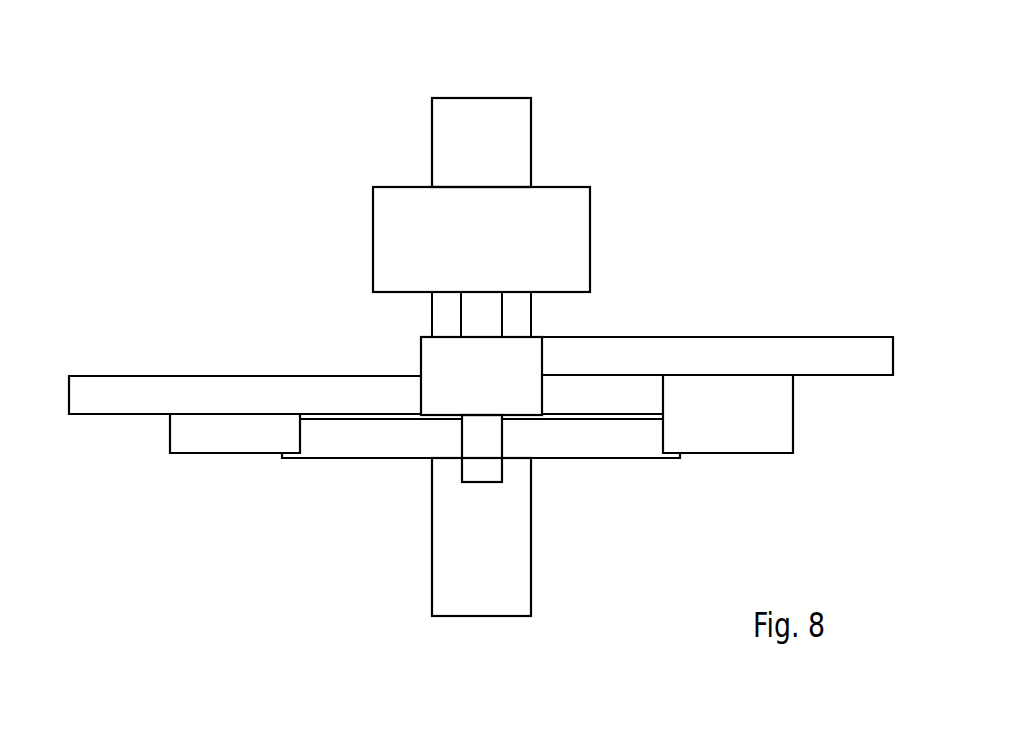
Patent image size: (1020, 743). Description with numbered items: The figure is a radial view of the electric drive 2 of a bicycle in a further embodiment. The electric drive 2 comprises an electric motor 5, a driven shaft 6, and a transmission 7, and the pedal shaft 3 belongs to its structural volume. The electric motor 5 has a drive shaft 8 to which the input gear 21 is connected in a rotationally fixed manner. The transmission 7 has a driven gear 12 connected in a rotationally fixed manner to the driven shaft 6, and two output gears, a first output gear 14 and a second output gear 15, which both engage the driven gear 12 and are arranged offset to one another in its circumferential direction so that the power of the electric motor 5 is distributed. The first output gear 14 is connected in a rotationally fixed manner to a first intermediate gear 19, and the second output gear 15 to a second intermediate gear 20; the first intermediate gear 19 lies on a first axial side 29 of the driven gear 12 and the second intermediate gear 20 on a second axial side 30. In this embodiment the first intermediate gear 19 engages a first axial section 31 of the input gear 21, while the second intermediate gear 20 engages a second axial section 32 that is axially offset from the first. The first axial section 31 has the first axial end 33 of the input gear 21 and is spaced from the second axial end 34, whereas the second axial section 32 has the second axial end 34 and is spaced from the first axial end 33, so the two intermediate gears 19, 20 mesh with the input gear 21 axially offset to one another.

The electric drive 2 is at (773, 208).
The pedal shaft 3 is at (433, 555).
The electric motor 5 is at (489, 251).
The driven shaft 6 is at (489, 551).
The transmission 7 is at (668, 216).
The drive shaft 8 is at (489, 323).
The driven gear 12 is at (569, 457).
The first output gear 14 is at (224, 440).
The second output gear 15 is at (740, 442).
The first intermediate gear 19 is at (207, 383).
The second intermediate gear 20 is at (768, 344).
The input gear 21 is at (496, 388).
The first axial side 29 is at (625, 418).
The second axial side 30 is at (622, 459).
The first axial section 31 is at (428, 395).
The second axial section 32 is at (538, 353).
The first axial end 33 is at (433, 416).
The second axial end 34 is at (540, 337).